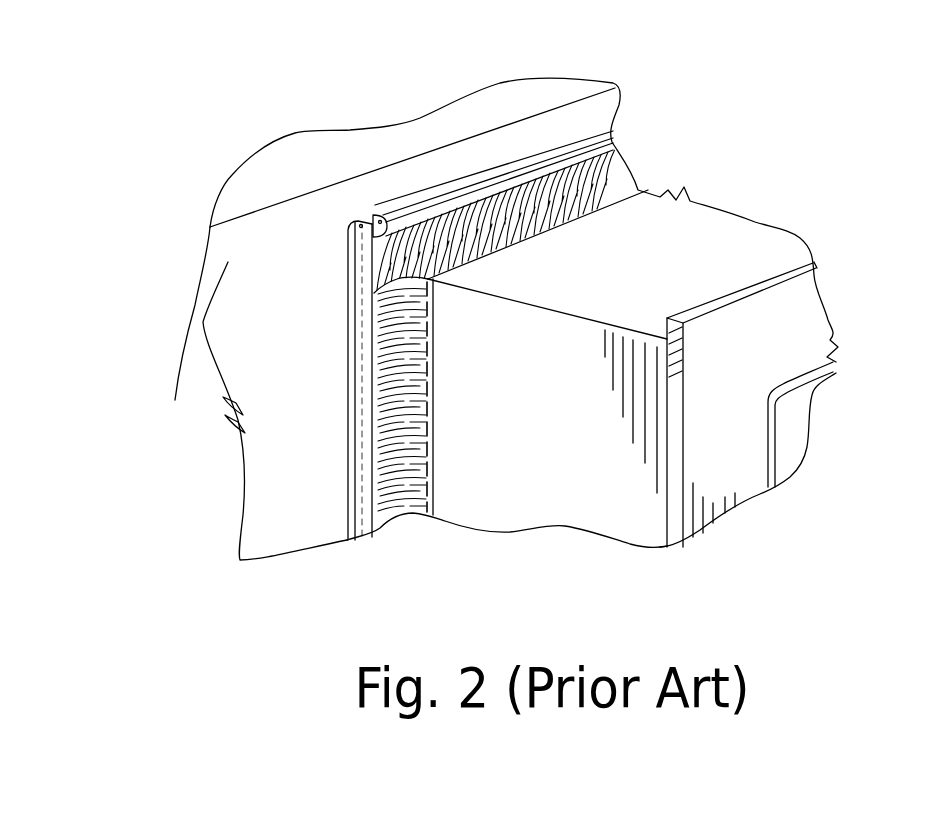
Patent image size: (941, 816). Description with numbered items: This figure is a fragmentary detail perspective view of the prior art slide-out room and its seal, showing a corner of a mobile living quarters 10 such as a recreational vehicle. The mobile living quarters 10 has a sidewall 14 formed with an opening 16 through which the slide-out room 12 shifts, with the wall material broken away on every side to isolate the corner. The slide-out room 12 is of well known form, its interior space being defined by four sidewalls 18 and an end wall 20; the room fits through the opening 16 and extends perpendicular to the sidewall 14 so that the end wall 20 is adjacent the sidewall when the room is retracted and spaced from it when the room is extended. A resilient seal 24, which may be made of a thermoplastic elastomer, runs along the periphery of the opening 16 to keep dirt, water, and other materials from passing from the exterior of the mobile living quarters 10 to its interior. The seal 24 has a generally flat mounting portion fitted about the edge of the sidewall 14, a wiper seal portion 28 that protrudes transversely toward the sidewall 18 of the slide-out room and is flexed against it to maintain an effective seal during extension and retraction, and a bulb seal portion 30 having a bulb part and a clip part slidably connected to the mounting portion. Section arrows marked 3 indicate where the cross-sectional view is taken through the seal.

The mobile living quarters 10 is at (302, 155).
The slide-out room 12 is at (806, 236).
The sidewall 14 is at (255, 393).
The opening 16 is at (626, 142).
The sidewalls 18 is at (737, 228).
The end wall 20 is at (797, 323).
The resilient seal 24 is at (347, 258).
The wiper seal portion 28 is at (407, 479).
The bulb seal portion 30 is at (366, 432).
The section line indicator 3 is at (327, 383).